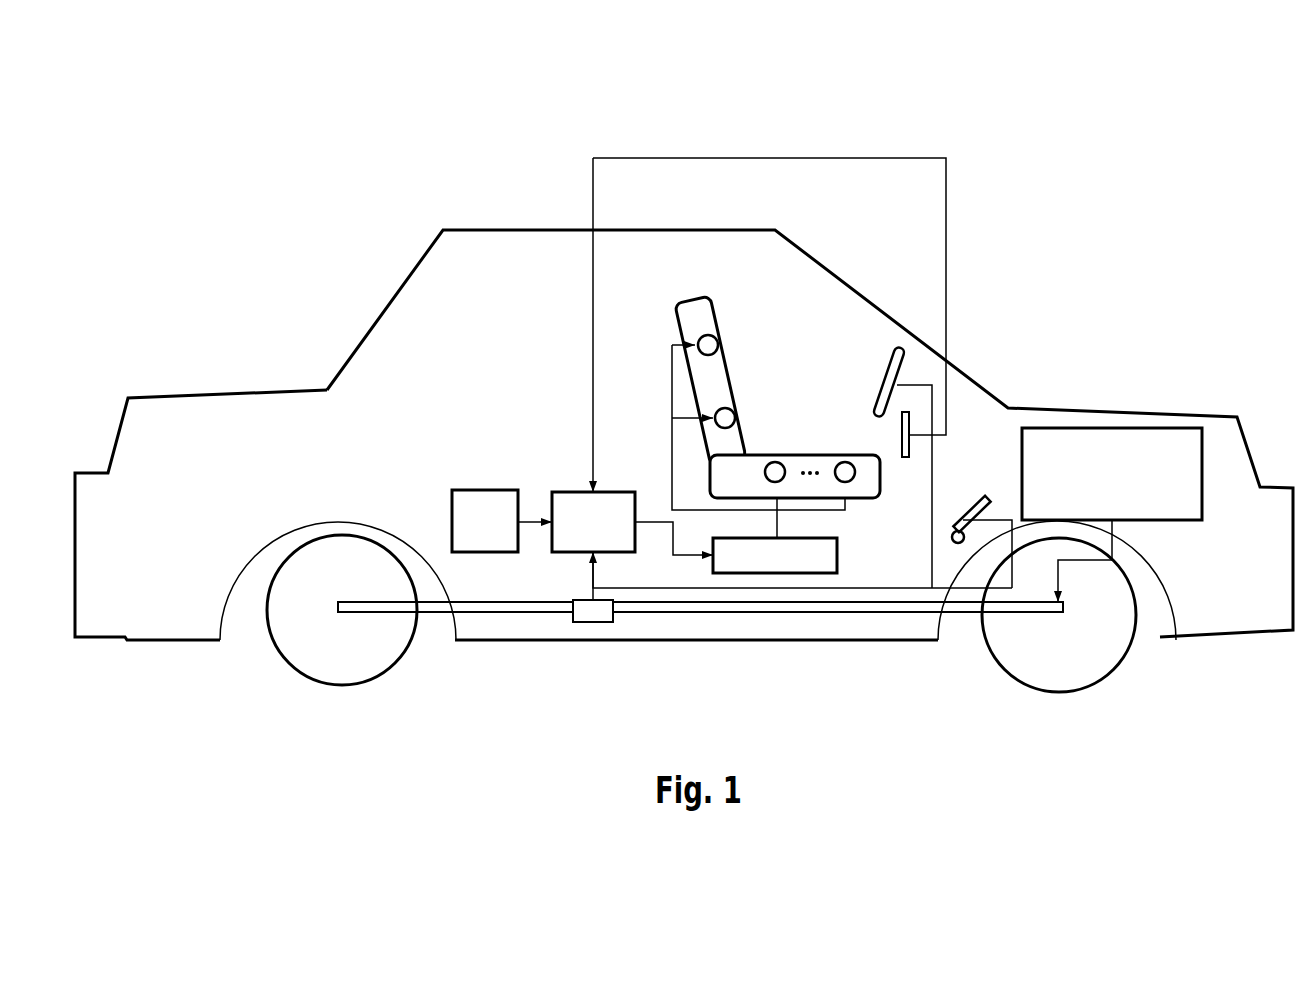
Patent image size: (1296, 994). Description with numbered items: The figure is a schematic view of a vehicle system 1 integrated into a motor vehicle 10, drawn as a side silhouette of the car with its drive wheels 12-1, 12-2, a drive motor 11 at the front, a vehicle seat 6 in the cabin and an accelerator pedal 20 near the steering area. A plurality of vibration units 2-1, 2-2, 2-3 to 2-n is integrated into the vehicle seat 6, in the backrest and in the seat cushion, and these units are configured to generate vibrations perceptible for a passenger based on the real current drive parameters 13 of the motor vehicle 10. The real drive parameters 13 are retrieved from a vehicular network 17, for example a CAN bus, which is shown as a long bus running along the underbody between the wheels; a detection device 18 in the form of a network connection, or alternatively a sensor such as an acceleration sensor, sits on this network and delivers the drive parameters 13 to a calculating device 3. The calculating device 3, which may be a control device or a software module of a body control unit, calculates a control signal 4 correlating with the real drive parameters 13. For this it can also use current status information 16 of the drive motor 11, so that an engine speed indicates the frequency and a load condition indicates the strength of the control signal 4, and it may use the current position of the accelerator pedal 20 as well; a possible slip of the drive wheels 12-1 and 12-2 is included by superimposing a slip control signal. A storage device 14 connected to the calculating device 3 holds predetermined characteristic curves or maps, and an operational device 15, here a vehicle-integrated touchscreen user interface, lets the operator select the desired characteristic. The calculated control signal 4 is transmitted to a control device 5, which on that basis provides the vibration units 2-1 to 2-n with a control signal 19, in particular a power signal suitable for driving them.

The vehicle system 1 is at (480, 343).
The motor vehicle 10 is at (1208, 127).
The calculating device 3 is at (565, 492).
The storage device 14 is at (482, 487).
The control signal 4 is at (687, 555).
The control device 5 is at (777, 573).
The vehicle seat 6 is at (693, 300).
The vibration unit 2-1 is at (703, 338).
The vibration unit 2-2 is at (722, 413).
The vibration unit 2-3 is at (775, 462).
The vibration unit 2-n is at (845, 462).
The drive motor 11 is at (1130, 462).
The drive wheel 12-1 is at (1100, 635).
The drive wheel 12-2 is at (307, 640).
The real drive parameters 13 is at (592, 575).
The operational device 15 is at (905, 457).
The status information 16 is at (1053, 577).
The vehicular network 17 is at (663, 607).
The detection device 18 is at (587, 607).
The control signal 19 is at (775, 522).
The accelerator pedal 20 is at (967, 513).